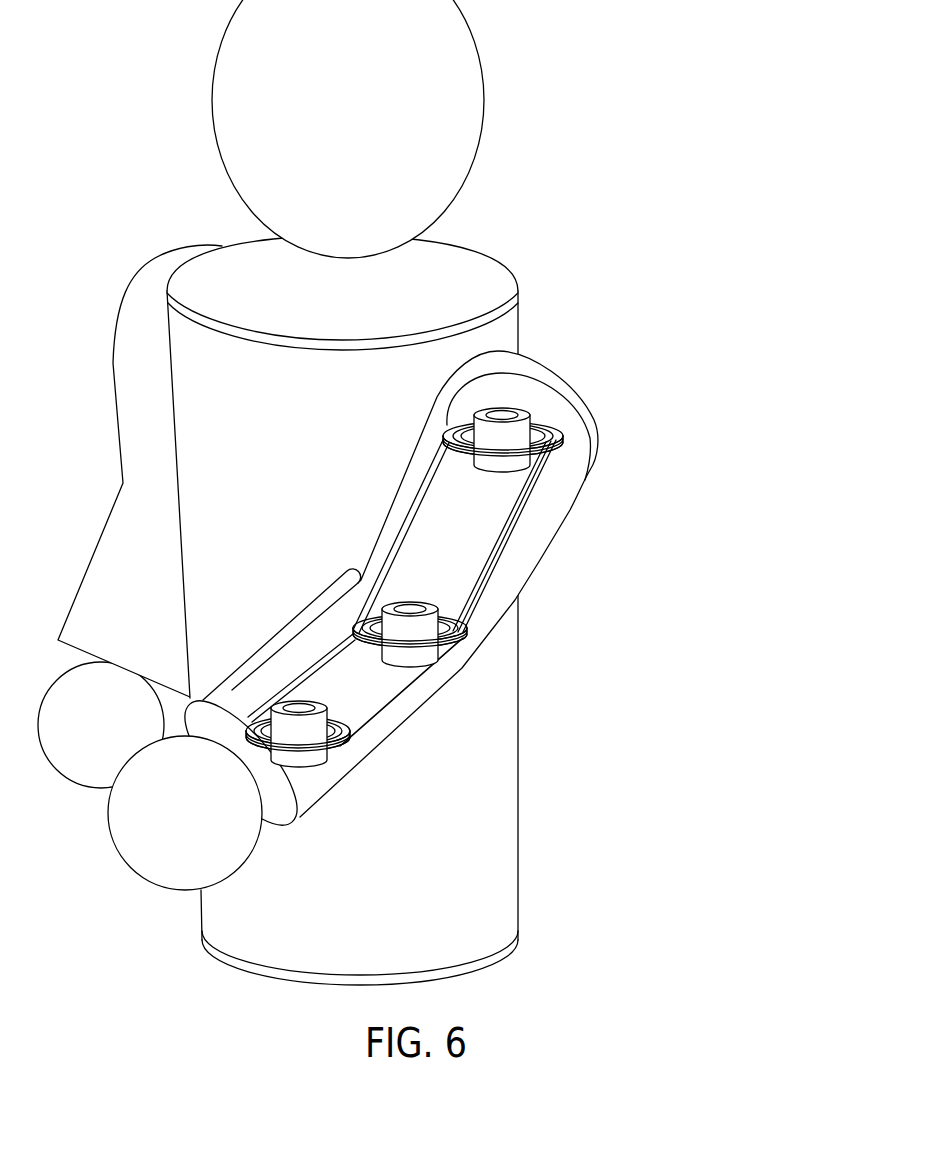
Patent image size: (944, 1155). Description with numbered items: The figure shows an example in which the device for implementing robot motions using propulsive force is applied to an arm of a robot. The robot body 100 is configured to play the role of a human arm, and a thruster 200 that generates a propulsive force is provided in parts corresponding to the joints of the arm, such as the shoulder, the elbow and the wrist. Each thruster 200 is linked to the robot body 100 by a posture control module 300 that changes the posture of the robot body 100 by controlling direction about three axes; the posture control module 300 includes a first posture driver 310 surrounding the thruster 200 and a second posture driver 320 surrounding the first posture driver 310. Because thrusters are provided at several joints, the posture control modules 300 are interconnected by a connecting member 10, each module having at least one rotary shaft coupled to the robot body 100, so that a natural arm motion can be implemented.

The connecting member 10 is at (410, 692).
The robot body 100 is at (535, 363).
The thruster 200 is at (523, 430).
The posture control module 300 is at (555, 628).
The first posture driver 310 is at (458, 618).
The second posture driver 320 is at (467, 633).